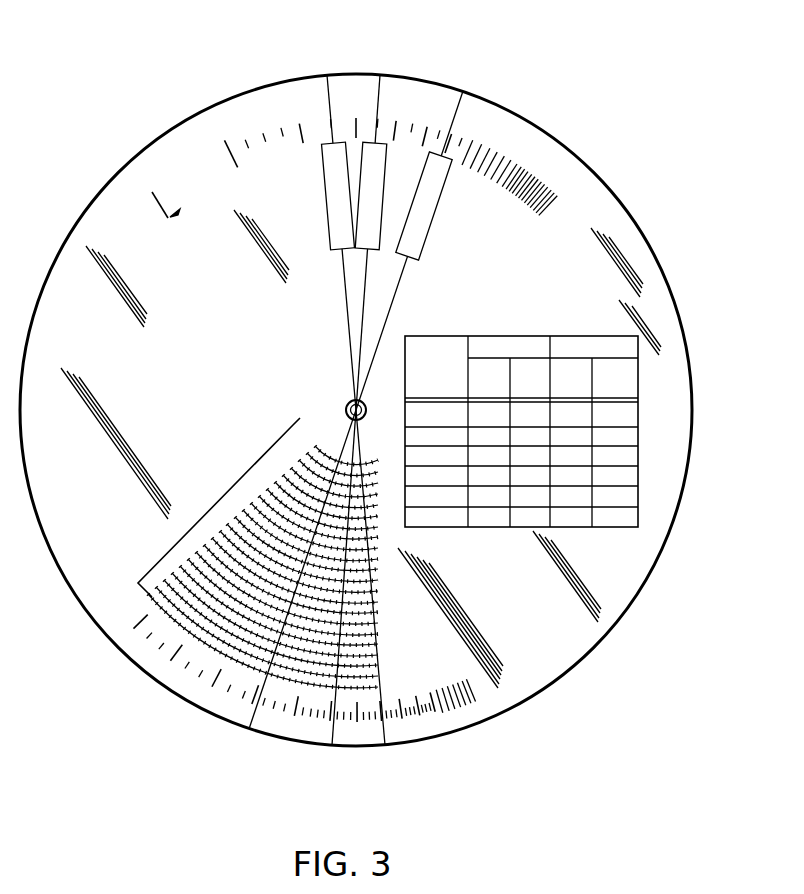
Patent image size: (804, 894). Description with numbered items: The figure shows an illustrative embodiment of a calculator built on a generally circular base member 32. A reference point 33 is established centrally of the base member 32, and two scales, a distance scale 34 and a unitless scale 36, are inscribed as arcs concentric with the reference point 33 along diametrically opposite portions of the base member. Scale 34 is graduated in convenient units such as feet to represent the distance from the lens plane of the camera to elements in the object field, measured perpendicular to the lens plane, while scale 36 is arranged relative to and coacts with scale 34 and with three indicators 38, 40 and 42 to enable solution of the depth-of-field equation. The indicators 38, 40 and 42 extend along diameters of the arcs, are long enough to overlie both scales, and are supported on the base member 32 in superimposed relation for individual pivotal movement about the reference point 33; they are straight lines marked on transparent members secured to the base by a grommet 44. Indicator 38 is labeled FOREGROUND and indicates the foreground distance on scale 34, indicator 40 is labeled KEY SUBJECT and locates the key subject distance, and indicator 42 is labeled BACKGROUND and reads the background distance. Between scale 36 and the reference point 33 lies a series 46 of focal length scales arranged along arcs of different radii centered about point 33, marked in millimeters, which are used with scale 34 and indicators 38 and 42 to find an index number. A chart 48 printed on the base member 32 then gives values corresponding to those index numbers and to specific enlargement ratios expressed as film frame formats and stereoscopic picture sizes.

The base member 32 is at (94, 236).
The reference point 33 is at (349, 413).
The distance scale 34 is at (240, 126).
The unitless scale 36 is at (151, 651).
The FOREGROUND indicator 38 is at (326, 88).
The KEY SUBJECT indicator 40 is at (381, 90).
The BACKGROUND indicator 42 is at (464, 105).
The grommet 44 is at (348, 403).
The series of focal length scales 46 is at (206, 504).
The chart 48 is at (638, 400).